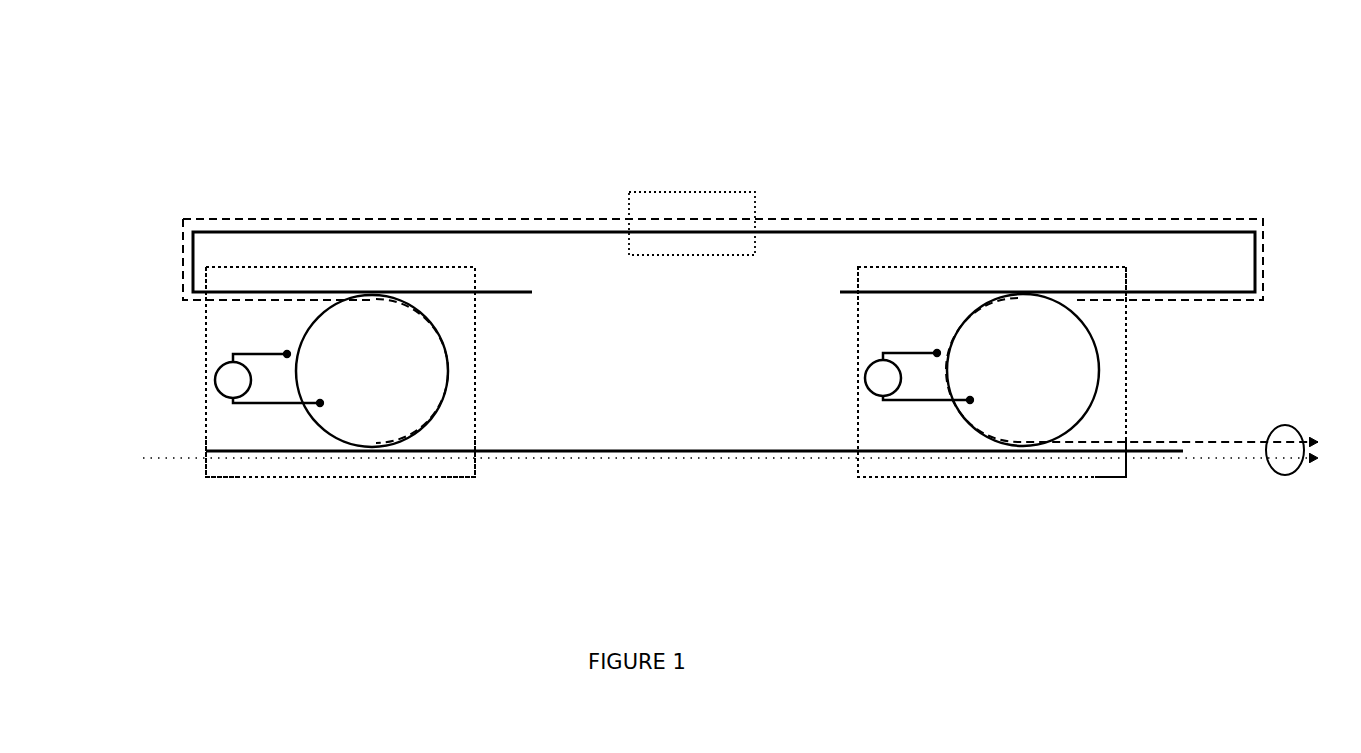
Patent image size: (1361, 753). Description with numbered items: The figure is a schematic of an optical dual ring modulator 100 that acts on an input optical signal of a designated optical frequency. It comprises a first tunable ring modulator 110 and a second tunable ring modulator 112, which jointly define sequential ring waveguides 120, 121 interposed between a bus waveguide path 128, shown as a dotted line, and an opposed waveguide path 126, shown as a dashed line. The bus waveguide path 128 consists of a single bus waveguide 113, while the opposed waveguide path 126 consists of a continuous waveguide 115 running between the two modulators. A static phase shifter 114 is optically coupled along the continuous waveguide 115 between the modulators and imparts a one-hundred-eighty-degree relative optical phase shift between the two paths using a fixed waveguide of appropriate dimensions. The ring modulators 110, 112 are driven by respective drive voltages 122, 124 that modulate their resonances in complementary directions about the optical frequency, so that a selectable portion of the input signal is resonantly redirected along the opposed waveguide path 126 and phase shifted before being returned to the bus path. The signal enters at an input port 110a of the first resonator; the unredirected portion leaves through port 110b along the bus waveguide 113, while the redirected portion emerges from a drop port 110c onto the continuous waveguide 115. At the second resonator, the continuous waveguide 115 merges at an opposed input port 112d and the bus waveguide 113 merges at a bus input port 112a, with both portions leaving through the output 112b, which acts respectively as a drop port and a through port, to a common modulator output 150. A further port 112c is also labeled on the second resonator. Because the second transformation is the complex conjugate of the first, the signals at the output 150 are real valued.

The optical dual ring modulator 100 is at (557, 130).
The first tunable ring modulator 110 is at (527, 358).
The input port 110a is at (205, 452).
The through port 110b is at (475, 452).
The drop port 110c is at (205, 292).
The second tunable ring modulator 112 is at (846, 340).
The bus input port 112a is at (857, 452).
The output of the second resonator 112b is at (1126, 452).
The second module top-left corner 112c is at (858, 292).
The opposed input port 112d is at (1125, 292).
The bus waveguide 113 is at (727, 450).
The static phase shifter 114 is at (697, 192).
The continuous waveguide 115 is at (883, 229).
The first ring waveguide 120 is at (444, 340).
The second ring waveguide 121 is at (1090, 330).
The first drive voltage 122 is at (210, 380).
The second drive voltage 124 is at (862, 378).
The opposed waveguide path 126 is at (355, 218).
The bus waveguide path 128 is at (643, 458).
The modulator output 150 is at (1283, 477).